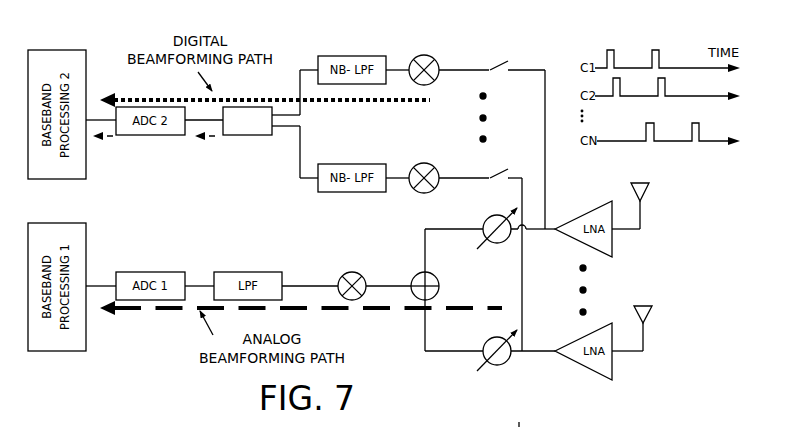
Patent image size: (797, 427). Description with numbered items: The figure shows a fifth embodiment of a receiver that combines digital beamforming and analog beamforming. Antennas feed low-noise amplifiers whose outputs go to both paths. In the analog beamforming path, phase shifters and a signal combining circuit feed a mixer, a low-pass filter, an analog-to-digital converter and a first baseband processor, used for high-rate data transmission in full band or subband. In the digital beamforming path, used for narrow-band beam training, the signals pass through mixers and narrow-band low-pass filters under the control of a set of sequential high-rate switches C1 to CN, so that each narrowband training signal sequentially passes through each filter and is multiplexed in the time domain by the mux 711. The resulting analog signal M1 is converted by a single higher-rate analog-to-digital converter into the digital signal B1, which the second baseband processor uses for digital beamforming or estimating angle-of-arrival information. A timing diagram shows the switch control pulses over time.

The mux 711 is at (259, 136).
The digital signal B1 is at (104, 146).
The analog signal M1 is at (206, 146).
The high-rate switch C1 is at (500, 38).
The high-rate switch CN is at (500, 145).